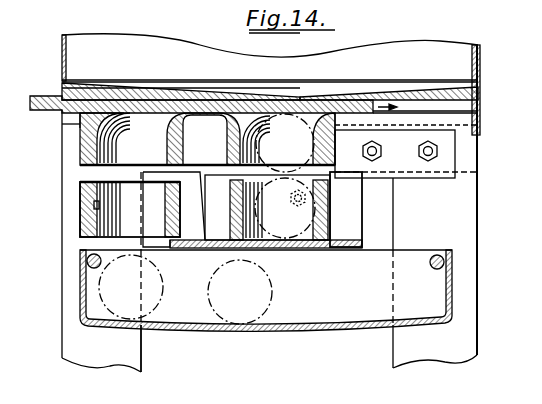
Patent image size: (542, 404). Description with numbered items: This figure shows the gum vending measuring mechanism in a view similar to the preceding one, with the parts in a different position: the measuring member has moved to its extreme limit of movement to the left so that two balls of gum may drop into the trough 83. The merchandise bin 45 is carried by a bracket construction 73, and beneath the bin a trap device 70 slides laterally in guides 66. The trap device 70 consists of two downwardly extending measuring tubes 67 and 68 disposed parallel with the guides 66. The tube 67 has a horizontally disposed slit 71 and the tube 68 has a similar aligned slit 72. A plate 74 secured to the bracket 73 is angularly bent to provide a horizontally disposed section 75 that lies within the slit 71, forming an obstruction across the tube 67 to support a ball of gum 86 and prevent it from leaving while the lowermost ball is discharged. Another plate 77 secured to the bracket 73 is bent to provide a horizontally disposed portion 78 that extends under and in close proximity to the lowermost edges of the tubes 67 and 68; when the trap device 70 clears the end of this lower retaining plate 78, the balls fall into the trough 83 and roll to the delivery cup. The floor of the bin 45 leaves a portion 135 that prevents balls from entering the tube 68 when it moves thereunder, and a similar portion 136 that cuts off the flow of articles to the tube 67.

The bin 45 is at (477, 57).
The portion of bin floor 135 is at (142, 91).
The portion of bin floor 136 is at (398, 93).
The guides 66 is at (472, 109).
The trap device 70 is at (41, 112).
The ball of gum 86 is at (238, 135).
The plate 74 is at (452, 148).
The horizontally disposed section 75 is at (410, 174).
The slit 72 is at (87, 173).
The measuring tube 68 is at (90, 215).
The slit 71 is at (232, 181).
The measuring tube 67 is at (322, 196).
The plate 77 is at (363, 222).
The horizontally disposed portion 78 is at (306, 249).
The trough 83 is at (195, 323).
The bracket construction 73 is at (121, 358).